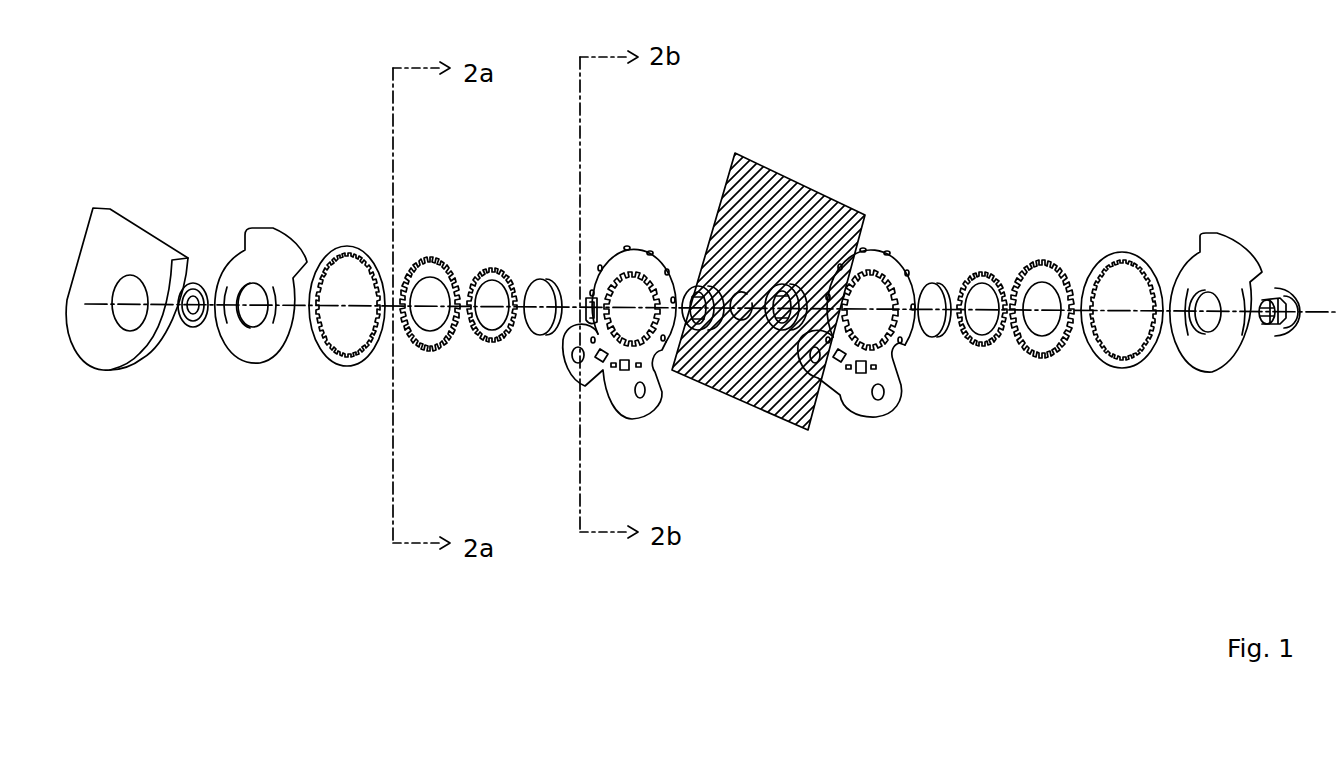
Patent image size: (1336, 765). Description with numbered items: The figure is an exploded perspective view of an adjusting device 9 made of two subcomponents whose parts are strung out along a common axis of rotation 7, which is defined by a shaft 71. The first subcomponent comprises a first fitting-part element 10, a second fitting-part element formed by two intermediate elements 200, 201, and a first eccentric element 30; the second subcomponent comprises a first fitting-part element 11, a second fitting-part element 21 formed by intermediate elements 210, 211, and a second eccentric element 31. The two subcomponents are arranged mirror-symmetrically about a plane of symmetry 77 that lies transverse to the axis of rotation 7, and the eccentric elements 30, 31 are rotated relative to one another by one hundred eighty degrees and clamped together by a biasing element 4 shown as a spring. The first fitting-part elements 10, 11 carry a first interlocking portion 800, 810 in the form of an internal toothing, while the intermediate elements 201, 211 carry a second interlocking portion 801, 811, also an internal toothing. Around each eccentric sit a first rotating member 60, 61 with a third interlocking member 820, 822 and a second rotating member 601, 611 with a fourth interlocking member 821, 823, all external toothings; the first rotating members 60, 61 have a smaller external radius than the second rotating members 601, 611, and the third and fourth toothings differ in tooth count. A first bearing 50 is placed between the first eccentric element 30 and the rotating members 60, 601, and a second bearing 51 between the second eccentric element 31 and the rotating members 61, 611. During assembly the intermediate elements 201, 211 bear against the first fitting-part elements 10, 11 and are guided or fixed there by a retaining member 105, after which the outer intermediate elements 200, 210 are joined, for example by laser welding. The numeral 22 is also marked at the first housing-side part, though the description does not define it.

The adjusting device 9 is at (700, 214).
The first housing part 22 is at (255, 213).
The second fitting-part intermediate element 200 is at (262, 360).
The second interlocking and/or frictional portion 801 is at (350, 250).
The second fitting-part intermediate element 201 is at (338, 360).
The fourth interlocking and/or frictional member 821 is at (428, 258).
The second rotating member 601 is at (420, 352).
The third interlocking and/or frictional member 820 is at (492, 266).
The first rotating member 60 is at (495, 344).
The first bearing or sliding means 50 is at (530, 337).
The first interlocking and/or frictional portion 800 is at (586, 294).
The first fitting-part element 10 is at (637, 247).
The retaining member 105 is at (628, 370).
The plane of symmetry 77 is at (742, 293).
The biasing element 4 is at (773, 252).
The first eccentric element 30 is at (699, 331).
The second eccentric element 31 is at (784, 330).
The first fitting-part element 11 is at (876, 250).
The first interlocking and/or frictional portion 810 is at (882, 282).
The second bearing or sliding means 51 is at (924, 341).
The third interlocking and/or frictional member 822 is at (981, 272).
The first rotating member 61 is at (979, 347).
The fourth interlocking and/or frictional member 823 is at (1043, 260).
The second rotating member 611 is at (1036, 358).
The second interlocking and/or frictional portion 811 is at (1122, 252).
The second fitting-part intermediate element 211 is at (1106, 366).
The second fitting-part intermediate element 210 is at (1201, 373).
The second fitting-part element 21 is at (1232, 392).
The shaft 71 is at (1277, 296).
The axis of rotation 7 is at (1327, 309).